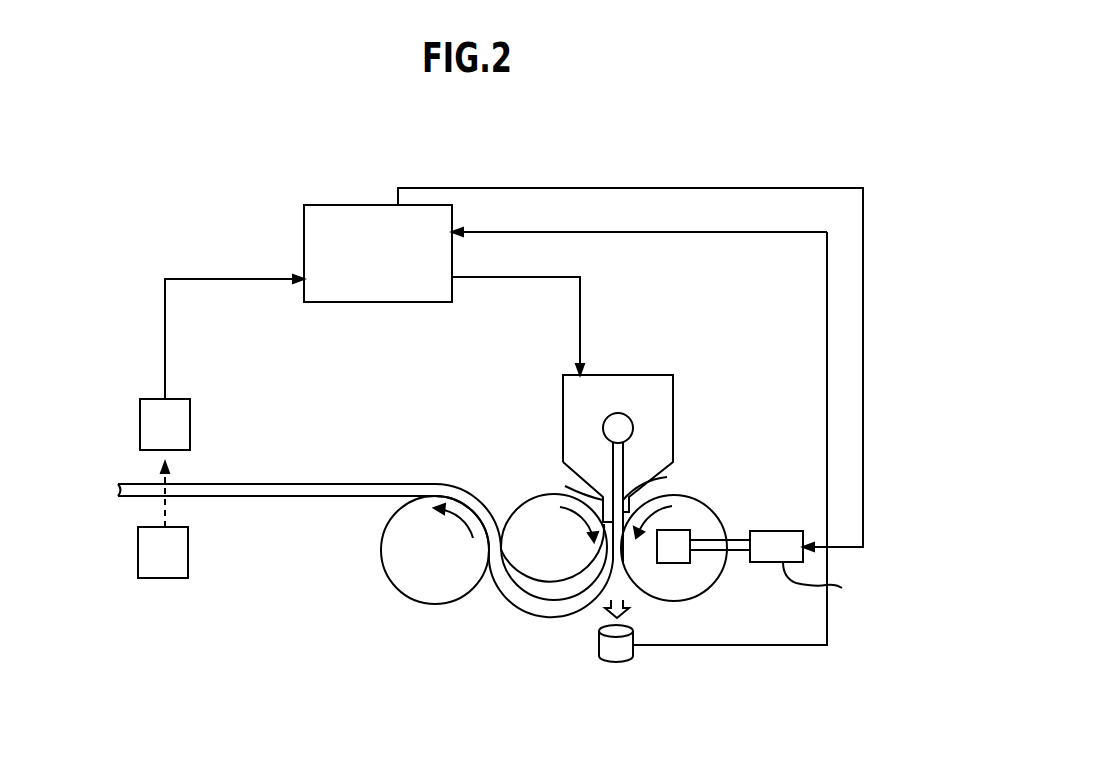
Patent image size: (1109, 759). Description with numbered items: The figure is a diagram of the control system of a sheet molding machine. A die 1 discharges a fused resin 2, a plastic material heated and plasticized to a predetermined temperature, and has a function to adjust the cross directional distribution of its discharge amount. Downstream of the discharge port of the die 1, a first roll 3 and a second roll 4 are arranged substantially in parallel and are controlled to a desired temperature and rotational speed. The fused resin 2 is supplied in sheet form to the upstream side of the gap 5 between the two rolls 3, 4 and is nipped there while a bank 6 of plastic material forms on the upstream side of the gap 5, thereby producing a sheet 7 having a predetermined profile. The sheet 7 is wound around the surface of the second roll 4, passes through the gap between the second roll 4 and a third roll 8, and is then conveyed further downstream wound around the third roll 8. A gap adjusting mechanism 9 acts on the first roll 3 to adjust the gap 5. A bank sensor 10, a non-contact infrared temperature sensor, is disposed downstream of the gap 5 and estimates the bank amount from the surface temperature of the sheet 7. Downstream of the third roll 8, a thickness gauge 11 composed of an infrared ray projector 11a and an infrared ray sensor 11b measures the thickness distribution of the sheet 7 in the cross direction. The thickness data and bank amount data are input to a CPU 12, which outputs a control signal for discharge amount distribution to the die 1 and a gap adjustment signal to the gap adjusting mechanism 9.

The die 1 is at (662, 435).
The fused resin 2 is at (667, 477).
The first roll 3 is at (707, 515).
The second roll 4 is at (530, 495).
The gap 5 is at (622, 580).
The bank 6 is at (565, 486).
The sheet 7 is at (335, 490).
The third roll 8 is at (413, 583).
The gap adjusting mechanism 9 is at (760, 580).
The bank sensor 10 is at (618, 657).
The thickness gauge 11 is at (242, 513).
The infrared ray projector 11a is at (167, 570).
The infrared ray sensor 11b is at (180, 418).
The CPU 12 is at (337, 205).